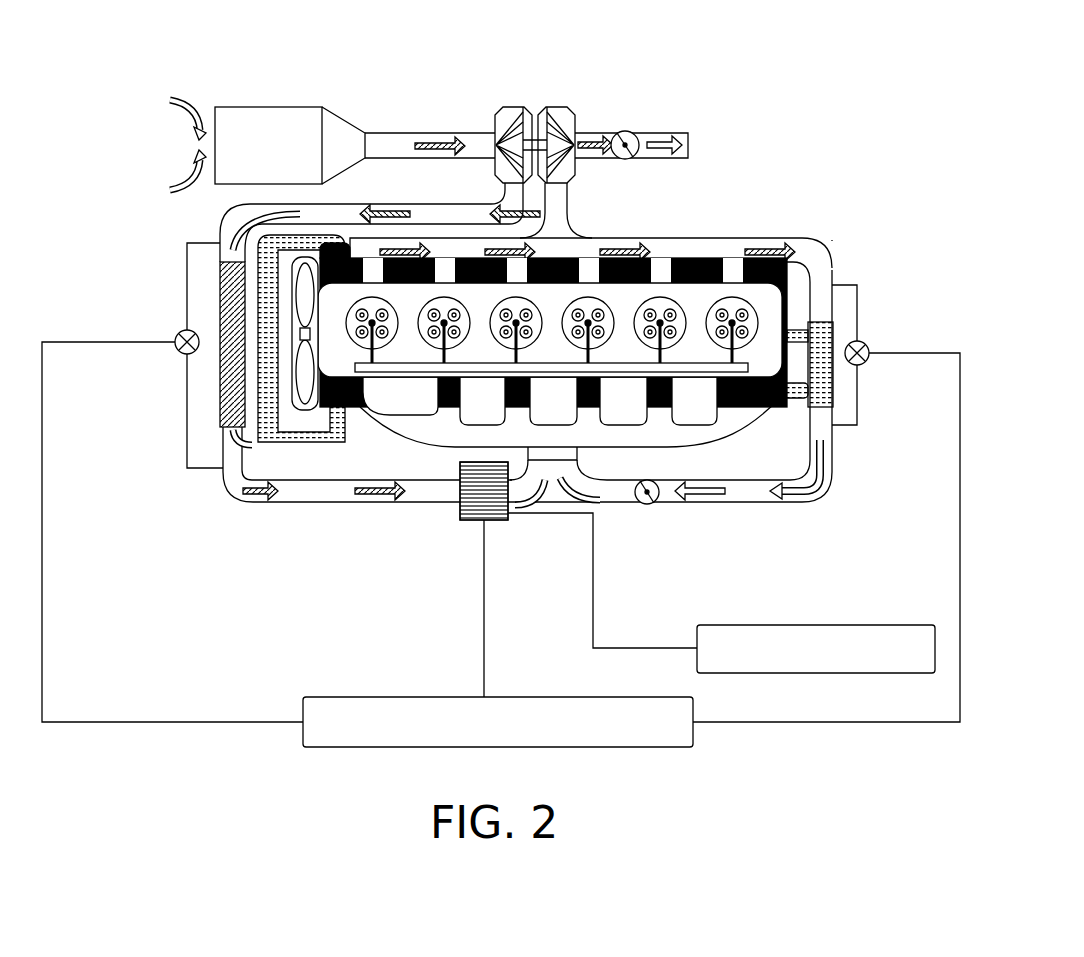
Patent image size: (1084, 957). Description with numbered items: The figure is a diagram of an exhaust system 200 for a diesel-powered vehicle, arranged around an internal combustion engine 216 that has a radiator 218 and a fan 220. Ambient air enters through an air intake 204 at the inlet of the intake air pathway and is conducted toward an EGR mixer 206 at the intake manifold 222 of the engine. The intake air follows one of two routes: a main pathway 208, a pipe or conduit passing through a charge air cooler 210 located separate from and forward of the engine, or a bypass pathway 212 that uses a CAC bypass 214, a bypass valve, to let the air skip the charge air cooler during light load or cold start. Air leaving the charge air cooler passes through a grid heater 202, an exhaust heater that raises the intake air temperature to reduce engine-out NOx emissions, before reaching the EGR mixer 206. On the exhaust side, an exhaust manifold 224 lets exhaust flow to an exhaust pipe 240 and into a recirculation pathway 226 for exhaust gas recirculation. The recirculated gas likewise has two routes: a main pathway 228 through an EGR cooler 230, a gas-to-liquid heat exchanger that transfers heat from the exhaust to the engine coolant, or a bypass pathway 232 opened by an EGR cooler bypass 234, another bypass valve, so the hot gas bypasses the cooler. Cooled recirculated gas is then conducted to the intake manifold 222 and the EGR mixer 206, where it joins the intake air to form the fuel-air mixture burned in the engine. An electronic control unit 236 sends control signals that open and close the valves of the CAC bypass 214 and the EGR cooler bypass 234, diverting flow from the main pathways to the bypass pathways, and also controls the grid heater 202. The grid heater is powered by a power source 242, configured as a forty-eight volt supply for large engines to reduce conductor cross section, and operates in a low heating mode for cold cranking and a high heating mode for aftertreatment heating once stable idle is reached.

The exhaust system 200 is at (772, 54).
The grid heater 202 is at (480, 520).
The air intake 204 is at (258, 107).
The EGR mixer 206 is at (562, 452).
The main pathway 208 is at (222, 216).
The charge air cooler 210 is at (218, 410).
The bypass pathway 212 is at (187, 250).
The CAC bypass 214 is at (178, 354).
The internal combustion engine 216 is at (697, 283).
The radiator 218 is at (233, 487).
The fan 220 is at (300, 410).
The intake manifold 222 is at (378, 422).
The exhaust manifold 224 is at (612, 238).
The recirculation pathway 226 is at (781, 262).
The main pathway 228 is at (818, 298).
The EGR cooler 230 is at (836, 383).
The bypass pathway 232 is at (835, 285).
The EGR cooler bypass 234 is at (862, 364).
The electronic control unit 236 is at (483, 747).
The exhaust pipe 240 is at (597, 133).
The power source 242 is at (900, 625).